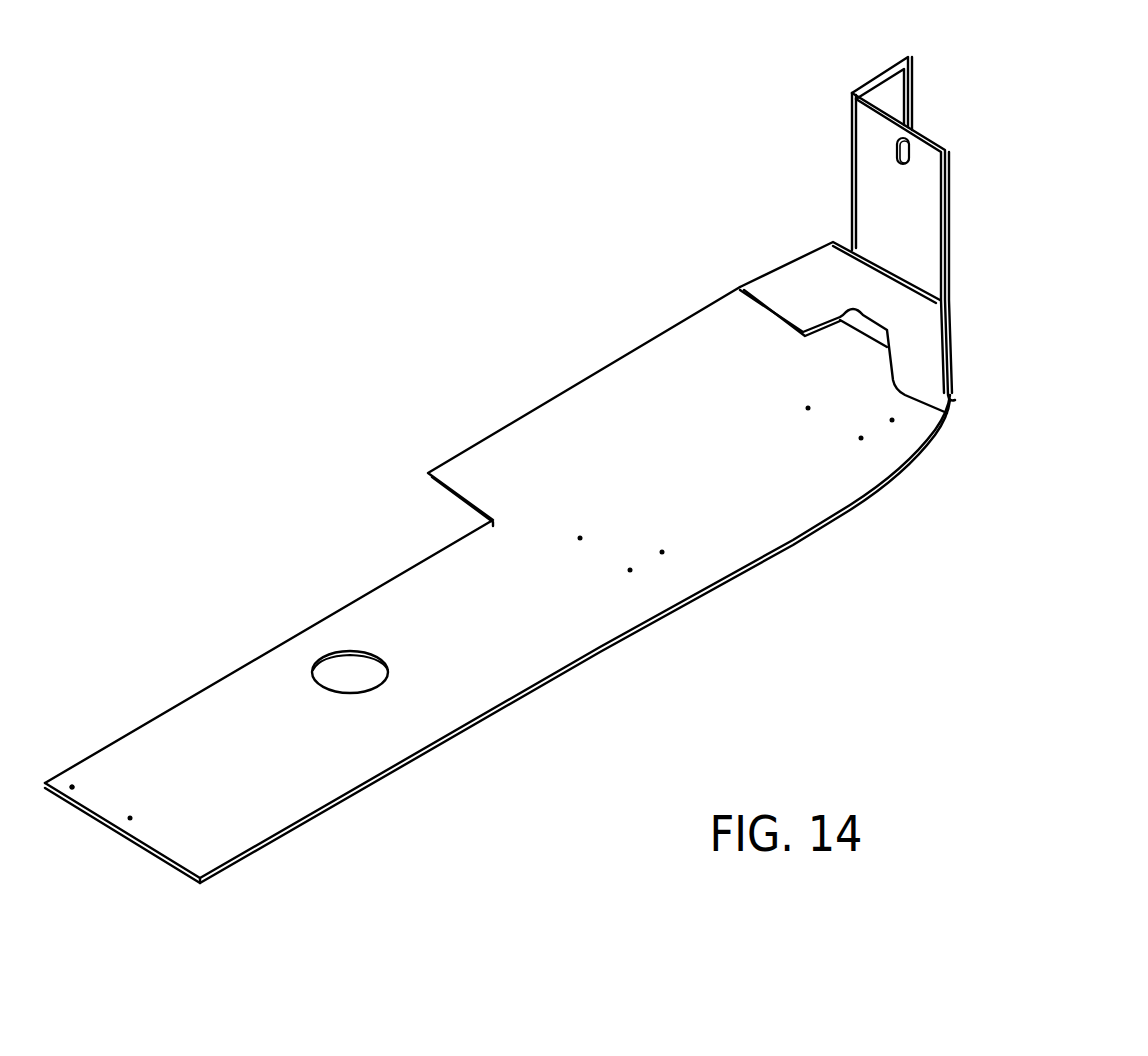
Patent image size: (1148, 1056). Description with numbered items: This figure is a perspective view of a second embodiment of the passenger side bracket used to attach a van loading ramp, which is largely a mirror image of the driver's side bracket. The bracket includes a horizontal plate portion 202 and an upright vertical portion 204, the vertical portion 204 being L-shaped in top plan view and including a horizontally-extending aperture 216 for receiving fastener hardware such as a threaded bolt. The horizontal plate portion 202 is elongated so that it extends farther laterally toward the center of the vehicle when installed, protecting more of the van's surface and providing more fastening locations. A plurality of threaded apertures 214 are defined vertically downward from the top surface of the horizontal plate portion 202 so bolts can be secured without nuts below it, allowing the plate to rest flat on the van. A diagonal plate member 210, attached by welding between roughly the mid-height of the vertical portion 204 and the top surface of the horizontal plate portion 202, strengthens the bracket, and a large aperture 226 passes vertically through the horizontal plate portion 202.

The horizontal plate portion 202 is at (645, 418).
The vertical portion 204 is at (893, 205).
The diagonal plate member 210 is at (815, 277).
The threaded apertures 214 is at (72, 787).
The horizontally-extending apertures 216 is at (900, 148).
The large aperture 226 is at (340, 668).